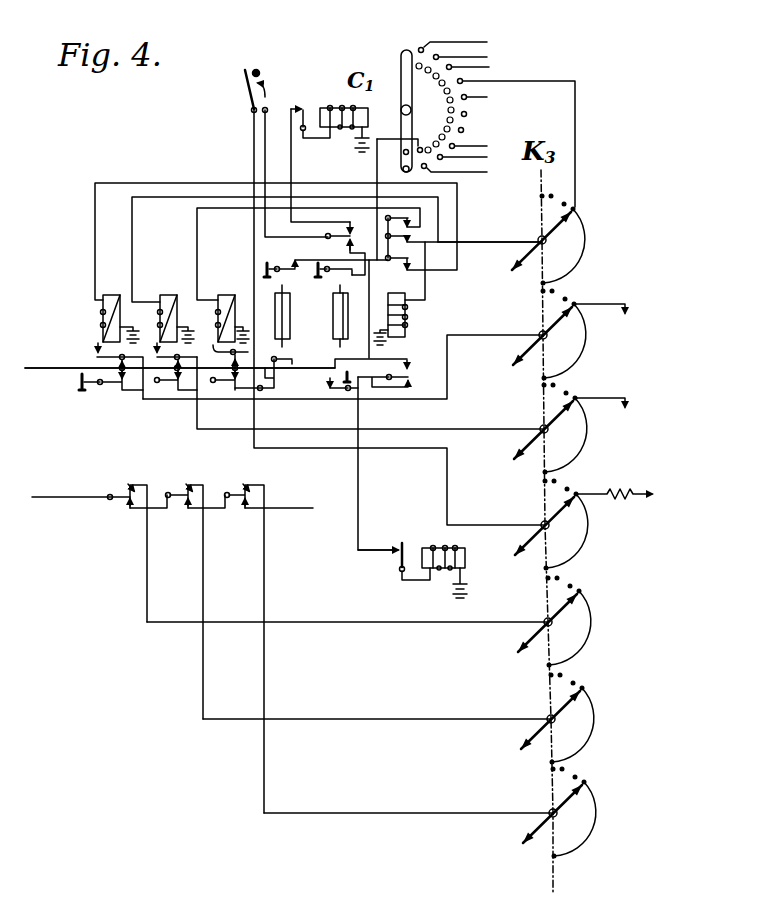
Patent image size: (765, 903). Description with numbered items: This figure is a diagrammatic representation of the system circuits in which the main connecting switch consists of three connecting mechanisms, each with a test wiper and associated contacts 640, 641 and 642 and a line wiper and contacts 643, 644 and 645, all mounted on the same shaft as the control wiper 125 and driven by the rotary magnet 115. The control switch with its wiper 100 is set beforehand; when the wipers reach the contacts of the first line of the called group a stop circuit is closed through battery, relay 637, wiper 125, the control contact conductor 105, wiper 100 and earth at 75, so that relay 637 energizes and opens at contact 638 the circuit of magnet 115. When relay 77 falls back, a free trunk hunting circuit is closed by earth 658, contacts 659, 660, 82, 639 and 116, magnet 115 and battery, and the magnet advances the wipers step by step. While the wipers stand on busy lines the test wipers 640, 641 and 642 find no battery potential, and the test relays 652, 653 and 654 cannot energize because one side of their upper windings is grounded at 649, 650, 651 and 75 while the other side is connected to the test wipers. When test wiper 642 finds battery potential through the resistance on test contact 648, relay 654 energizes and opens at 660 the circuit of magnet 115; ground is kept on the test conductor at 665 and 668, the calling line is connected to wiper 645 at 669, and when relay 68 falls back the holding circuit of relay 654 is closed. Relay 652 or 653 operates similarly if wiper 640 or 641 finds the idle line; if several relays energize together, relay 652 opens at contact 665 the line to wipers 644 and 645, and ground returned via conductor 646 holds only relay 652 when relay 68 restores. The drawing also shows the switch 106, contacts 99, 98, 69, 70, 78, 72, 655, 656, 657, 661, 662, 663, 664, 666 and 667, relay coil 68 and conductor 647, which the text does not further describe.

The switch 106 is at (271, 84).
The contact 99 is at (310, 113).
The relay coil C1 98 is at (350, 121).
The wiper of control switch 100 is at (407, 131).
The control contact conductor 105 is at (519, 136).
The control wiper 125 is at (542, 224).
The contact 651 is at (409, 221).
The contact 650 is at (409, 243).
The contact 649 is at (409, 268).
The contact 69 is at (350, 229).
The contact 70 is at (336, 251).
The contact 78 is at (279, 261).
The earth contact 75 is at (333, 276).
The relay 77 is at (294, 316).
The relay 68 is at (351, 316).
The relay 637 is at (406, 325).
The test relay 652 is at (117, 289).
The test relay 653 is at (176, 289).
The test relay 654 is at (234, 289).
The relay contact 655 is at (105, 369).
The relay contact 656 is at (177, 350).
The relay contact 657 is at (224, 356).
The conductor 661 is at (118, 370).
The earth contact 658 is at (118, 385).
The relay contact 662 is at (172, 383).
The contact 659 is at (176, 392).
The relay contact 663 is at (226, 386).
The contact 660 is at (240, 392).
The contact 82 is at (294, 359).
The contact 72 is at (332, 385).
The contact 639 is at (414, 366).
The contact 638 is at (426, 383).
The test wiper and contacts 640 is at (543, 324).
The conductor 646 is at (599, 299).
The test wiper and contacts 641 is at (544, 418).
The ground connection 647 is at (600, 392).
The test wiper and contacts 642 is at (545, 514).
The test contact conductor 648 is at (614, 486).
The line wiper and contacts 643 is at (548, 611).
The line wiper and contacts 644 is at (551, 708).
The line wiper and contacts 645 is at (553, 802).
The contact 664 is at (122, 549).
The contact 665 is at (132, 505).
The contact 666 is at (180, 598).
The contact 667 is at (197, 507).
The contact 668 is at (240, 645).
The contact 669 is at (268, 509).
The contact 116 is at (394, 561).
The rotary magnet 115 is at (459, 572).